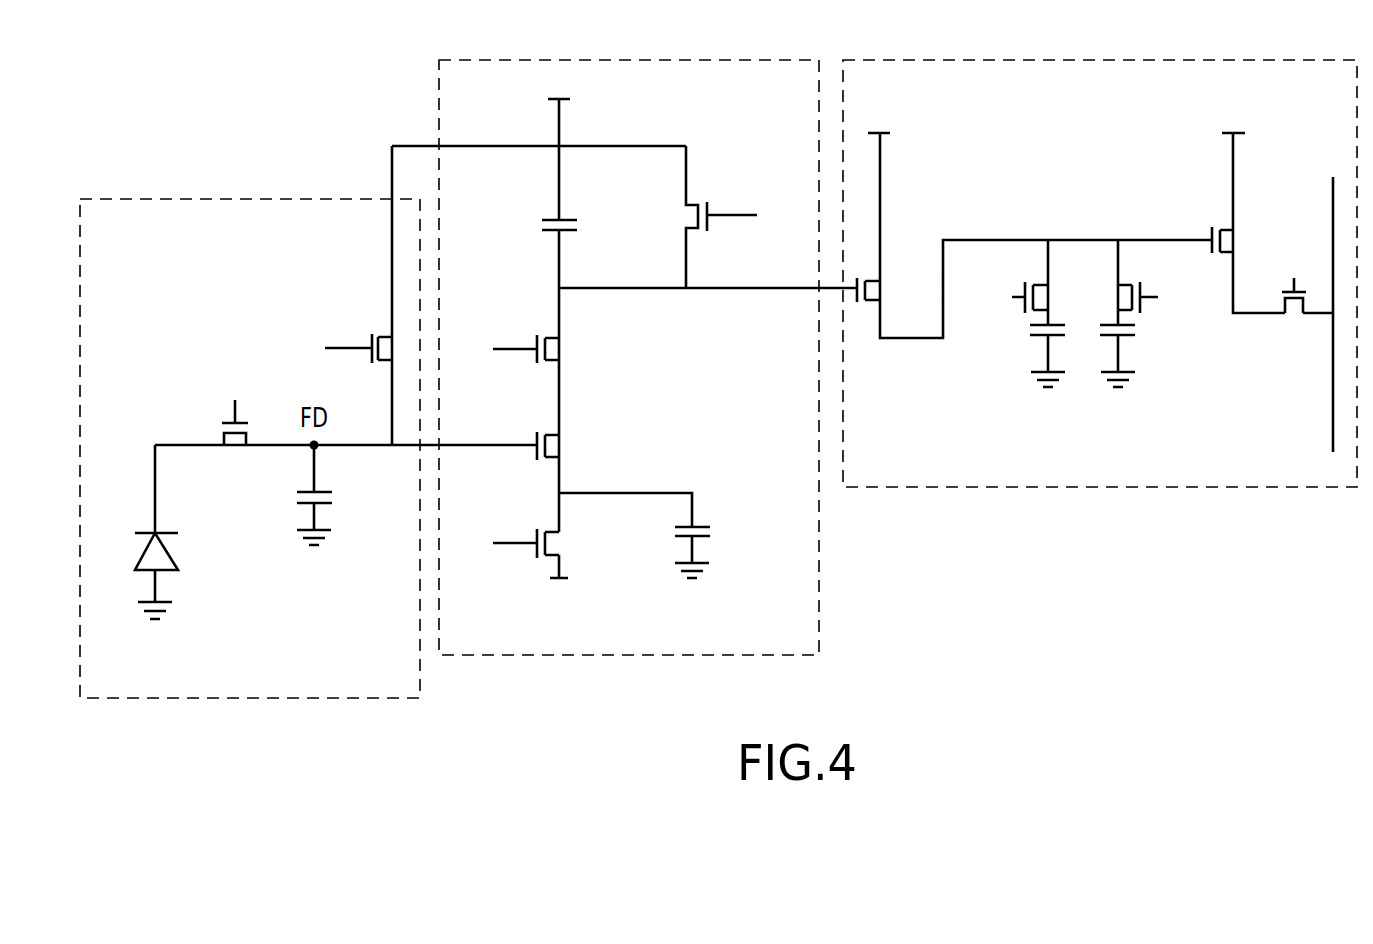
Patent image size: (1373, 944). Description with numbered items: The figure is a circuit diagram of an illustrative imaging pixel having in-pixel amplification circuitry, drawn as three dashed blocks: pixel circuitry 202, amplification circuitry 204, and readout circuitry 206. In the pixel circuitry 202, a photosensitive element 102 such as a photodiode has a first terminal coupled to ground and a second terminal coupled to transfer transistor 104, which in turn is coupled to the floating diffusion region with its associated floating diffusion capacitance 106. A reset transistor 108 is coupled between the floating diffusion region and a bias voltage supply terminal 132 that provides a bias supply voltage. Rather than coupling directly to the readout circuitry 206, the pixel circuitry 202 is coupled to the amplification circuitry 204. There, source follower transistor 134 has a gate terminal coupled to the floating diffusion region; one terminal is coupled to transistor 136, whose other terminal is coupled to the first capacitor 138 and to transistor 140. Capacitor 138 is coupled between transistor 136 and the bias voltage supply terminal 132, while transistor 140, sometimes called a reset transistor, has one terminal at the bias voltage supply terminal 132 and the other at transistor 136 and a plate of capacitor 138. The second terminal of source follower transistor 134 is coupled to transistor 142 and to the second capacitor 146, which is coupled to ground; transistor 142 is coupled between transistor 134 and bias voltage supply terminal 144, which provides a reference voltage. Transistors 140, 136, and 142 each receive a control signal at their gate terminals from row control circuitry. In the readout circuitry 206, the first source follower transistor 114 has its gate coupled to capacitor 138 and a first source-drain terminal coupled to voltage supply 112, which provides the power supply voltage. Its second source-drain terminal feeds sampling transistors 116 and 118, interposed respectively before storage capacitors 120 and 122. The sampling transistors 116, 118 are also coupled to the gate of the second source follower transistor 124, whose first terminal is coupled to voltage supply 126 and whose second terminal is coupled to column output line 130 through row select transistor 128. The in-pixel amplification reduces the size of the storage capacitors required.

The photosensitive element 102 is at (195, 556).
The transfer transistor 104 is at (235, 458).
The floating diffusion capacitance 106 is at (340, 503).
The reset transistor 108 is at (370, 330).
The voltage supply 112 is at (888, 135).
The source follower transistor 114 is at (905, 256).
The sampling transistor 116 is at (1035, 262).
The sampling transistor 118 is at (1112, 282).
The storage capacitor 120 is at (1030, 347).
The storage capacitor 122 is at (1138, 332).
The source follower transistor 124 is at (1217, 218).
The voltage supply 126 is at (1245, 135).
The row select transistor 128 is at (1288, 319).
The column output line 130 is at (1333, 190).
The bias voltage supply terminal 132 is at (570, 100).
The source follower transistor 134 is at (566, 445).
The transistor 136 is at (566, 350).
The capacitor 138 is at (546, 243).
The transistor 140 is at (722, 200).
The transistor 142 is at (566, 543).
The bias voltage supply terminal 144 is at (568, 580).
The capacitor 146 is at (708, 510).
The pixel circuitry 202 is at (260, 198).
The amplification circuitry 204 is at (438, 85).
The readout circuitry 206 is at (1145, 60).